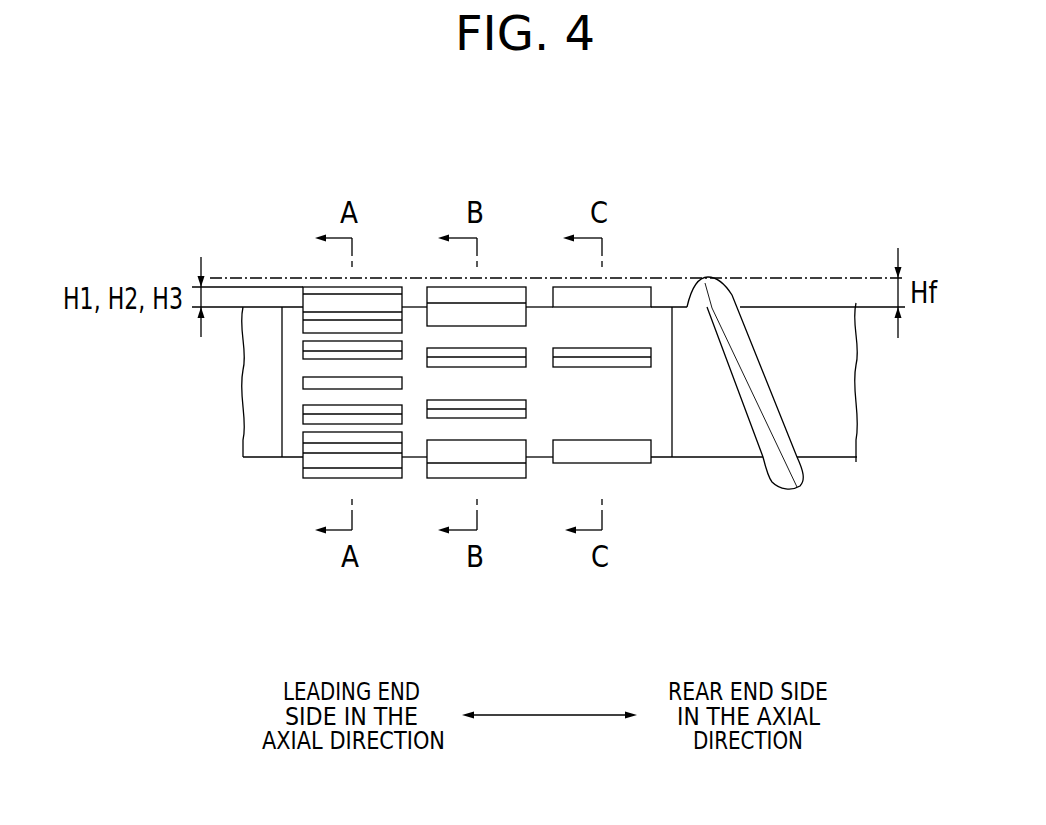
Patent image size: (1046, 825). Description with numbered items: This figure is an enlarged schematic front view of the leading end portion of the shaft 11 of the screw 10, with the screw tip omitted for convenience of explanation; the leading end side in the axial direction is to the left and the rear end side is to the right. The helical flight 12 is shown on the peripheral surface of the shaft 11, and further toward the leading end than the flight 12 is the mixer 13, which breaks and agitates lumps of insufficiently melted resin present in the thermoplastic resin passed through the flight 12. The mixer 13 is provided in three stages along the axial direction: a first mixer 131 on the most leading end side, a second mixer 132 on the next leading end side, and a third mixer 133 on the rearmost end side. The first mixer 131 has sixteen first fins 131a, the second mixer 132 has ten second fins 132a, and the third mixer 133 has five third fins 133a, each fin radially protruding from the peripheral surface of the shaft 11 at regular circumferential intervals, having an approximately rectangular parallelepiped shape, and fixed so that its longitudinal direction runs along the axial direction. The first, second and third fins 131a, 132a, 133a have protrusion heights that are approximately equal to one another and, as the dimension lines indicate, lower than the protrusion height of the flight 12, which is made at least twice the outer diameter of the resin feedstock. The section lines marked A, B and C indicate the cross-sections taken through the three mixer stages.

The screw 10 is at (272, 168).
The shaft 11 is at (815, 307).
The flight 12 is at (715, 278).
The mixer 13 is at (471, 402).
The first mixer 131 is at (309, 489).
The second mixer 132 is at (508, 490).
The third mixer 133 is at (637, 474).
The first fin 131a is at (313, 287).
The second fin 132a is at (438, 287).
The third fin 133a is at (636, 287).